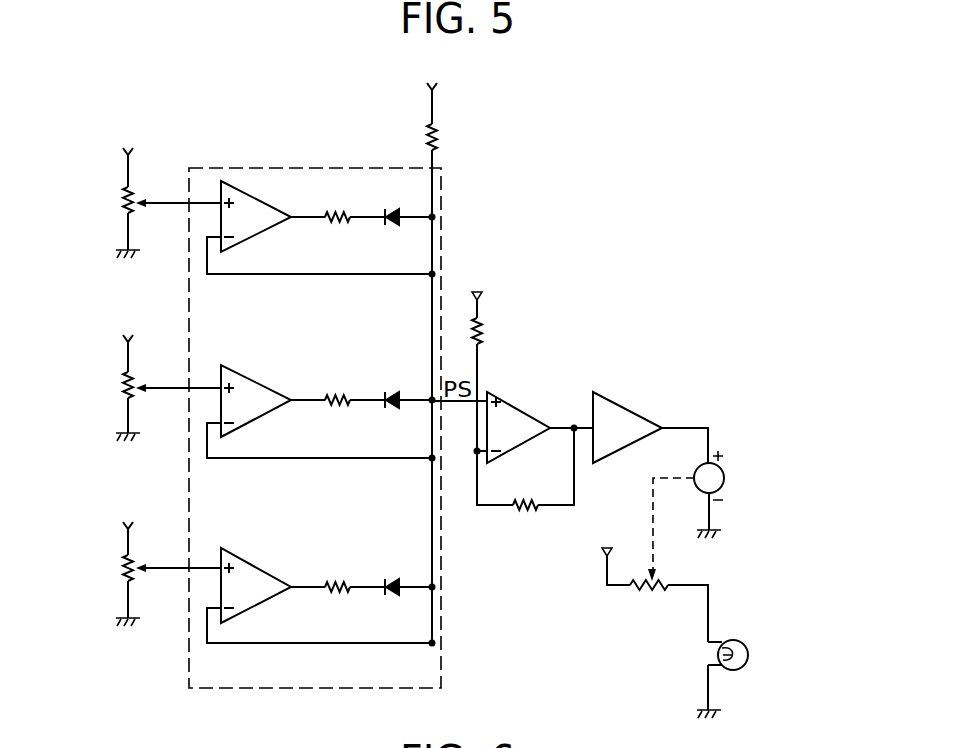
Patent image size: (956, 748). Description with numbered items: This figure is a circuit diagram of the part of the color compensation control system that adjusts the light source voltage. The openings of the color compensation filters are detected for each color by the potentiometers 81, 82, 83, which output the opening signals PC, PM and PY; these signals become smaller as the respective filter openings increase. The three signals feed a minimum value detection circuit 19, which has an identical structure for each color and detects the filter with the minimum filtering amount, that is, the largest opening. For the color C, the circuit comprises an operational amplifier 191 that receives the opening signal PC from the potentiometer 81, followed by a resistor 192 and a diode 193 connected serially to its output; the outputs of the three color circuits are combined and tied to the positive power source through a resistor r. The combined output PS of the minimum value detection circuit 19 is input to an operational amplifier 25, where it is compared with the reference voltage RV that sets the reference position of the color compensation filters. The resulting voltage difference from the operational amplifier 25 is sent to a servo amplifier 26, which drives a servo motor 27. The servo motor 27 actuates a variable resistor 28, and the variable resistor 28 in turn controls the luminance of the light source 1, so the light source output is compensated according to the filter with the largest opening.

The potentiometer 81 is at (123, 195).
The potentiometer 82 is at (123, 380).
The potentiometer 83 is at (123, 567).
The minimum value detection circuit 19 is at (442, 195).
The operational amplifier 191 is at (273, 203).
The resistor 192 is at (342, 211).
The diode 193 is at (391, 227).
The operational amplifier 25 is at (515, 412).
The servo amplifier 26 is at (627, 411).
The servo motor 27 is at (724, 470).
The variable resistor 28 is at (645, 575).
The light source 1 is at (746, 645).